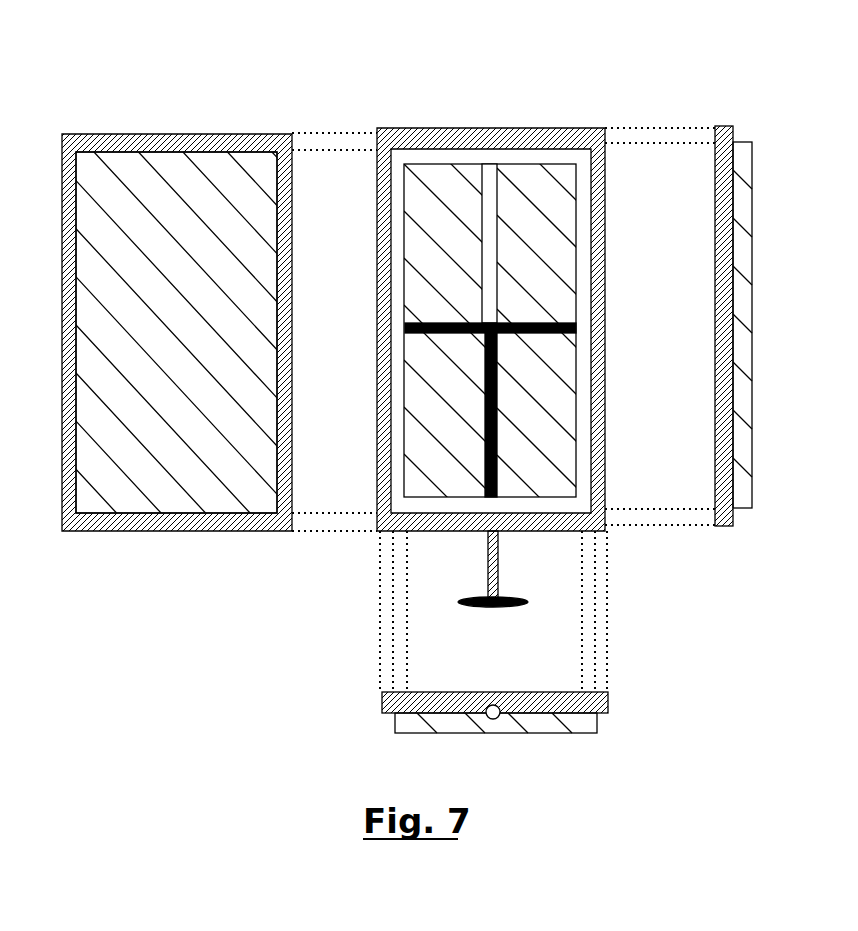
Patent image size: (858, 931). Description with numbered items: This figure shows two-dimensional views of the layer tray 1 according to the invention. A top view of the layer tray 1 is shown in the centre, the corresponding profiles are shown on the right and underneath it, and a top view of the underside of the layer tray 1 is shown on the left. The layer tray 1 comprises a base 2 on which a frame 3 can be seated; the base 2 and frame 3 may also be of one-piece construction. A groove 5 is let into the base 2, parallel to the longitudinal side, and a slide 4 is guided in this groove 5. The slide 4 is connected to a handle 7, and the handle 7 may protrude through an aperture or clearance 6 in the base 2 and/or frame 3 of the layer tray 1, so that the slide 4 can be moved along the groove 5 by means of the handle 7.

The layer tray 1 is at (473, 116).
The base 2 is at (167, 345).
The frame 3 is at (587, 127).
The slide 4 is at (576, 328).
The groove 5 is at (490, 224).
The aperture or clearance 6 is at (498, 693).
The handle 7 is at (496, 553).